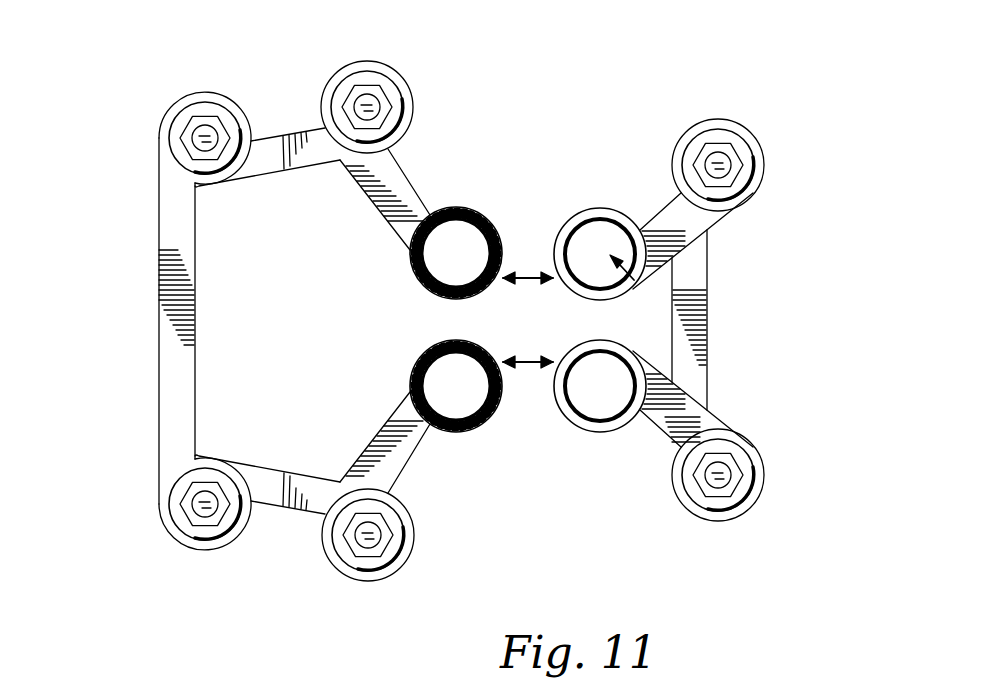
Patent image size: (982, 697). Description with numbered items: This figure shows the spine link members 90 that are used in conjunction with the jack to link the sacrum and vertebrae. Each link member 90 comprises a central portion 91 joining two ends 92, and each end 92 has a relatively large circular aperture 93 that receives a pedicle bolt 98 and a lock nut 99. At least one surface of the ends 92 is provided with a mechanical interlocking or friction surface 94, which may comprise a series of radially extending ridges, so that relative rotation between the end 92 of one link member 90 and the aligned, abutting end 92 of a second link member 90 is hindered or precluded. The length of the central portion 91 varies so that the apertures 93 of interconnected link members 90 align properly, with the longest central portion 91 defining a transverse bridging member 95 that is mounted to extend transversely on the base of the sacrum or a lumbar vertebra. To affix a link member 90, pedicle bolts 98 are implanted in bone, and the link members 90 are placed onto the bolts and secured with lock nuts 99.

The spine link member 90 is at (275, 108).
The central portion 91 is at (266, 174).
The end 92 is at (196, 93).
The circular aperture 93 is at (440, 266).
The mechanical interlocking or friction surface 94 is at (462, 300).
The transverse bridging member 95 is at (158, 333).
The pedicle bolt 98 is at (205, 136).
The lock nut 99 is at (190, 140).